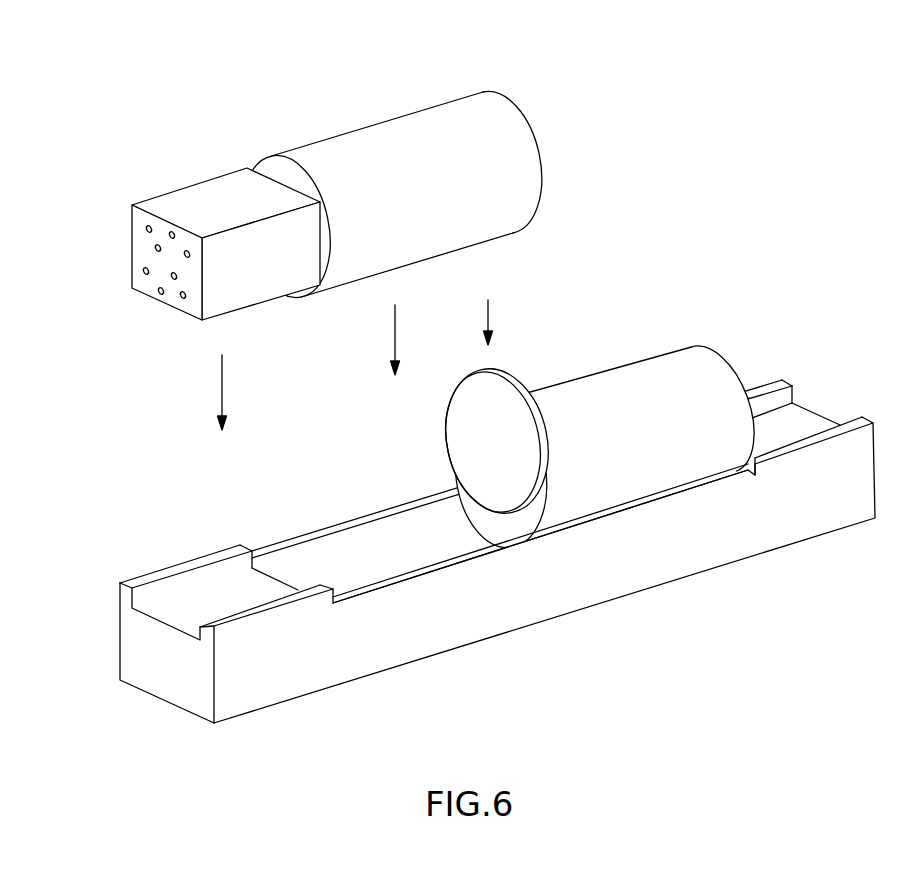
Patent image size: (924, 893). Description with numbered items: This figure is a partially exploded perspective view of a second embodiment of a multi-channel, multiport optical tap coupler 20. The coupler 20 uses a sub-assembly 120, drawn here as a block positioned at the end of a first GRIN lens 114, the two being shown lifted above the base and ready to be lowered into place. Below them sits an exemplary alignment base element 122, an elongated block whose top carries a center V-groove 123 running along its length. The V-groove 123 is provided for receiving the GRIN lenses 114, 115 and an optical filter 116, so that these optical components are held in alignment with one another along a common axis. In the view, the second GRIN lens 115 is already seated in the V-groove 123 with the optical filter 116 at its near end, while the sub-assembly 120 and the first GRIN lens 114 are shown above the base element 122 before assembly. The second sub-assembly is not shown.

The multi-channel, multiport optical tap coupler 20 is at (693, 153).
The GRIN lens 114 is at (372, 132).
The GRIN lens 115 is at (673, 365).
The optical filter 116 is at (482, 425).
The sub-assembly 120 is at (196, 195).
The alignment base element 122 is at (480, 551).
The center V-groove 123 is at (372, 552).